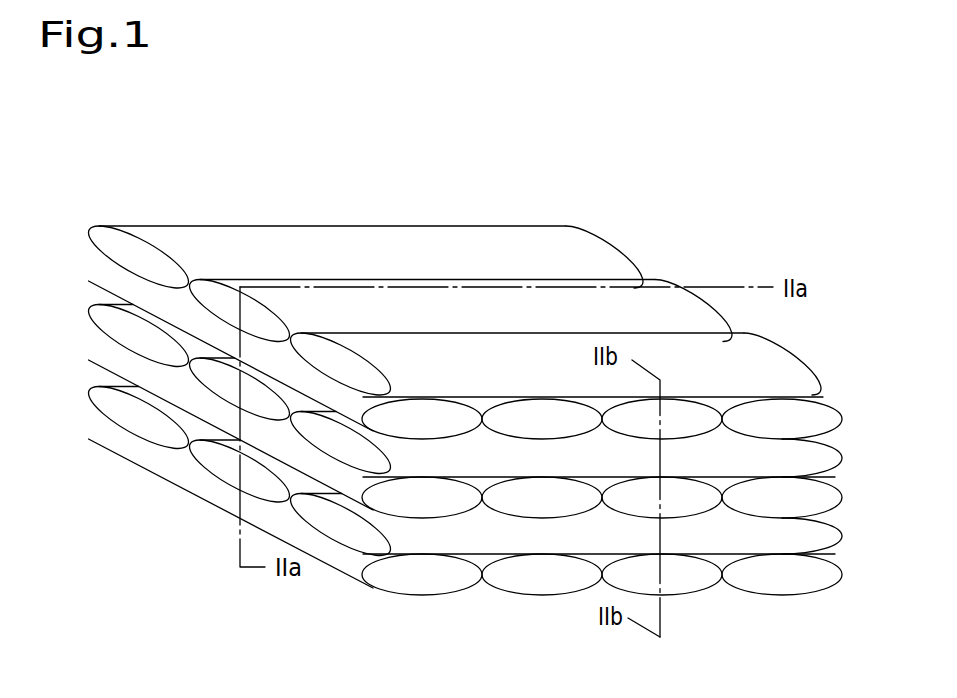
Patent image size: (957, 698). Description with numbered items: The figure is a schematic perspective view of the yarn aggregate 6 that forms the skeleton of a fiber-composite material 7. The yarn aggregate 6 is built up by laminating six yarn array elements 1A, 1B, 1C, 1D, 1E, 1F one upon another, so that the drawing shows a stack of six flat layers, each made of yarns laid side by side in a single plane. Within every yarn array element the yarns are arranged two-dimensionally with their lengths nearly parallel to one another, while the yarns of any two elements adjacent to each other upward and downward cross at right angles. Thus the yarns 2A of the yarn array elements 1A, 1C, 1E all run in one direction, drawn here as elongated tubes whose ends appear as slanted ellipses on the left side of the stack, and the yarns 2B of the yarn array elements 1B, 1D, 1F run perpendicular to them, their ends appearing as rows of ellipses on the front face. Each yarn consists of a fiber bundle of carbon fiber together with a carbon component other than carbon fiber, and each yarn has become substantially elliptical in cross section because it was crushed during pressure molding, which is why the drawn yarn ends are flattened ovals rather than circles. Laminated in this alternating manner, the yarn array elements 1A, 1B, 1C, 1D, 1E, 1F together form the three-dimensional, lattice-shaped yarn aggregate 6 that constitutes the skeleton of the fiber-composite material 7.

The yarn array element 1A is at (847, 364).
The yarn array element 1B is at (847, 403).
The yarn array element 1C is at (847, 441).
The yarn array element 1D is at (847, 480).
The yarn array element 1E is at (847, 518).
The yarn array element 1F is at (847, 557).
The yarn 2A is at (407, 300).
The yarn 2B is at (190, 323).
The yarn aggregate 6 is at (688, 275).
The fiber-composite material 7 is at (827, 348).